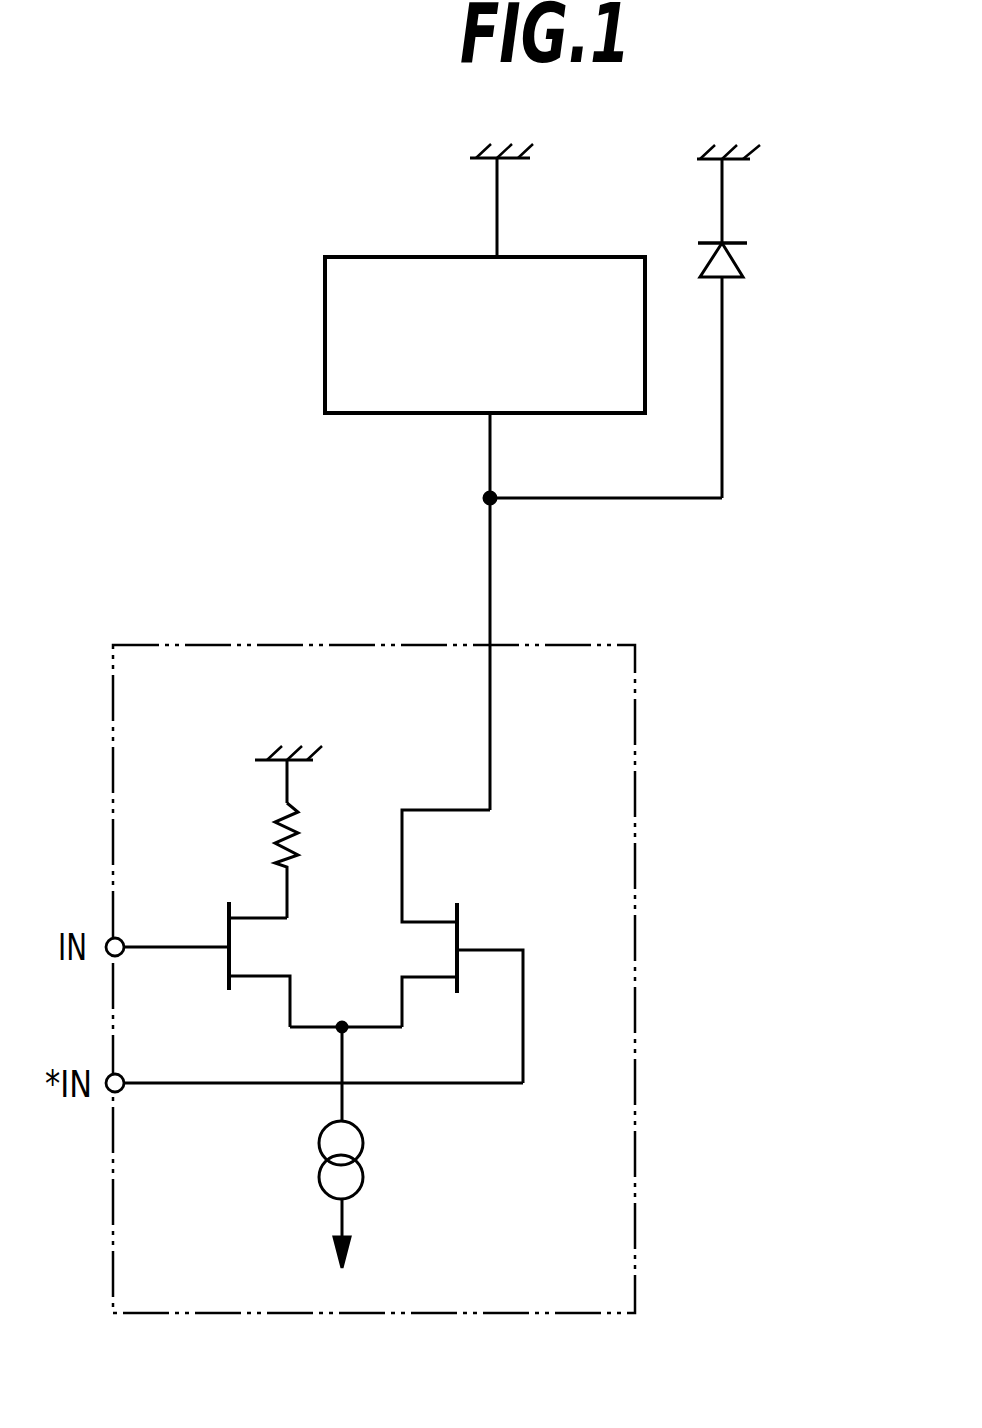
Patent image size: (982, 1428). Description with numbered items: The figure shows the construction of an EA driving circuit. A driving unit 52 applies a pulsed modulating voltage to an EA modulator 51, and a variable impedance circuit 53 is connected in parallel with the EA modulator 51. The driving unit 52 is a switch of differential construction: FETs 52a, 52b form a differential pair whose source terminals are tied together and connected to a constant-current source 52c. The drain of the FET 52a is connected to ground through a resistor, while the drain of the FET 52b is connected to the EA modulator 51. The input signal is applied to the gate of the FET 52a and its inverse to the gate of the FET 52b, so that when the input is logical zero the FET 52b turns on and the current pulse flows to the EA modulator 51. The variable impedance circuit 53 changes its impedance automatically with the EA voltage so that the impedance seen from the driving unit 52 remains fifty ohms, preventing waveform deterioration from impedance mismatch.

The EA modulator 51 is at (700, 263).
The driving unit 52 is at (596, 645).
The FET 52a is at (222, 917).
The FET 52b is at (472, 910).
The constant-current source 52c is at (363, 1177).
The variable impedance circuit 53 is at (350, 413).